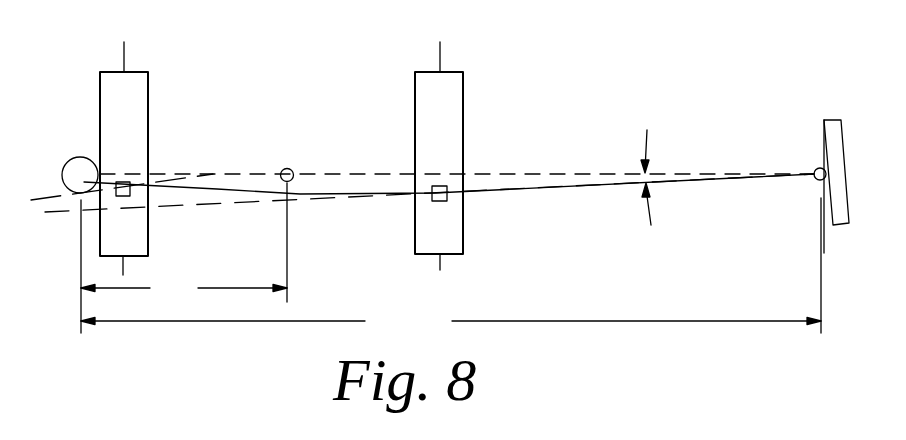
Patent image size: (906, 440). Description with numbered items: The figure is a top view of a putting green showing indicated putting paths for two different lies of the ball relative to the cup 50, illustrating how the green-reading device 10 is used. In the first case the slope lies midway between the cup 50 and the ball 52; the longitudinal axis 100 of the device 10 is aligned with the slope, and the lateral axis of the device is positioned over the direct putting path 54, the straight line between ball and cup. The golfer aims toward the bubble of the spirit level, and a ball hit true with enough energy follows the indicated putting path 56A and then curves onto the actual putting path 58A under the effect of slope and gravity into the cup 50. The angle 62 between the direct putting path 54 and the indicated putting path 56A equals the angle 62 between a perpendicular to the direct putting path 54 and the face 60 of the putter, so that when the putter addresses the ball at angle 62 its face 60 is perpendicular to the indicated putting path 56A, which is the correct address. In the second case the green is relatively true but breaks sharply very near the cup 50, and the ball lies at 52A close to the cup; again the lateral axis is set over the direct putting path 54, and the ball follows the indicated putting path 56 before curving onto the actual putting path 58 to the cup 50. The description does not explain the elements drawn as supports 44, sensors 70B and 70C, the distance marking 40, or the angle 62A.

The laser alignment device 10 is at (150, 101).
The measurement distance / work area 40 is at (618, 294).
The support pole 44 is at (124, 53).
The cup 50 is at (76, 157).
The ball 52 is at (816, 170).
The lie of the ball 52A is at (287, 169).
The direct putting path 54 is at (574, 173).
The indicated putting path 56 is at (234, 186).
The indicated putting path 56A is at (559, 186).
The actual putting path 58 is at (100, 192).
The actual putting path 58A is at (216, 190).
The face of the putter 60 is at (827, 192).
The angle 62 is at (648, 176).
The deviation angle 62A is at (181, 185).
The first sensor 70B is at (128, 196).
The second sensor 70C is at (446, 200).
The longitudinal axis 100 is at (126, 46).